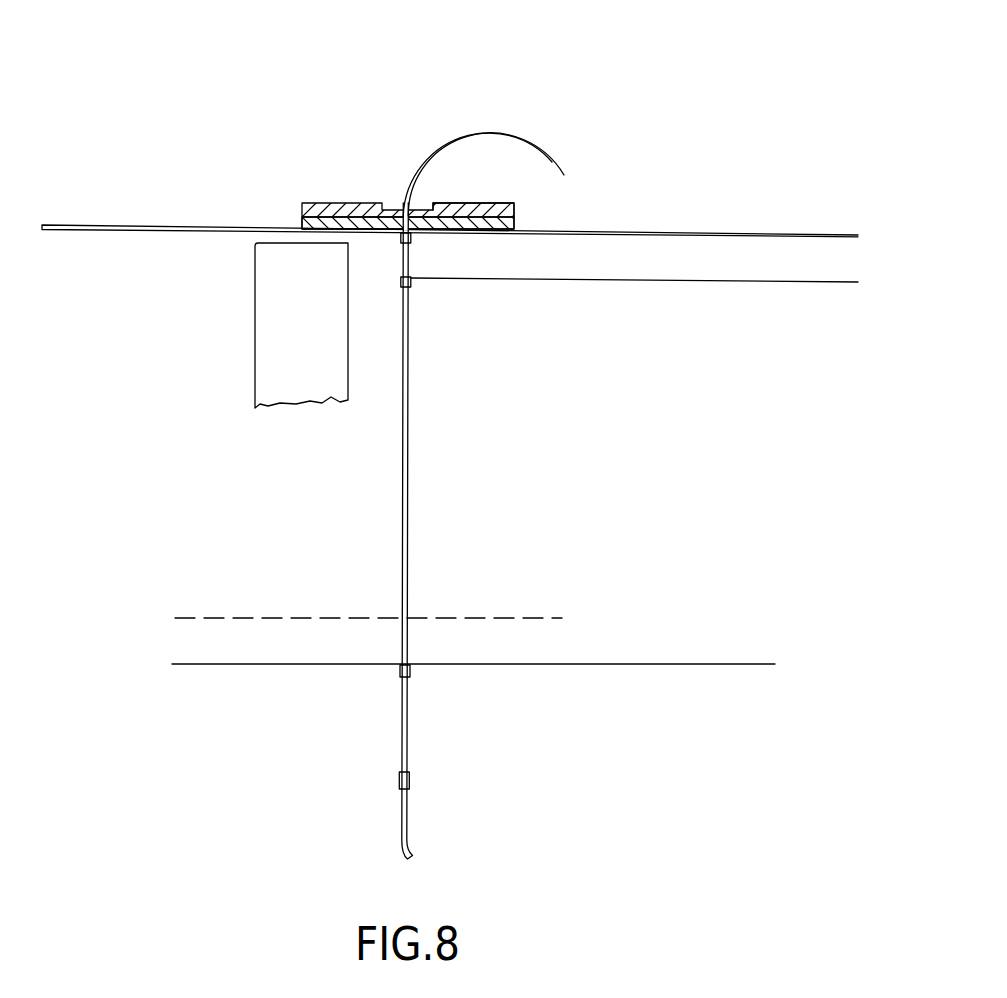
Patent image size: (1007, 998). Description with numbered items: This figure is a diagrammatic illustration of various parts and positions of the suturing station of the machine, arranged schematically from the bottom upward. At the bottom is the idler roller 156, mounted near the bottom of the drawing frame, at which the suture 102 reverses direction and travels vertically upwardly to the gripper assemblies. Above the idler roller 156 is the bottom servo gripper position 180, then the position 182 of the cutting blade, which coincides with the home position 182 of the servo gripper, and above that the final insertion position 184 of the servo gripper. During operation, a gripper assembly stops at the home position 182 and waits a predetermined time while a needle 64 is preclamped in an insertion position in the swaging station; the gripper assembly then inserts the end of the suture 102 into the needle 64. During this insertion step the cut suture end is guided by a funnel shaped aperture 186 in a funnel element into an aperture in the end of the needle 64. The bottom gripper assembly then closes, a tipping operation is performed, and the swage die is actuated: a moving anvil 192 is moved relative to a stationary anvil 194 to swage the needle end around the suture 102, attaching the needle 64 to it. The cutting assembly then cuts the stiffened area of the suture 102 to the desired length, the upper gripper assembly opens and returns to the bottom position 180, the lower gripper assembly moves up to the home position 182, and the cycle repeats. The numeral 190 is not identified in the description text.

The needle 64 is at (473, 128).
The suture 102 is at (408, 477).
The idler roller 156 is at (398, 779).
The bottom servo gripper position 180 is at (408, 670).
The cutting blade position and home position of the servo gripper 182 is at (482, 618).
The final insertion position of the servo gripper 184 is at (476, 237).
The funnel shaped aperture 186 is at (404, 228).
The adhesive layer 190 is at (515, 232).
The moving anvil 192 is at (515, 210).
The stationary anvil 194 is at (446, 178).